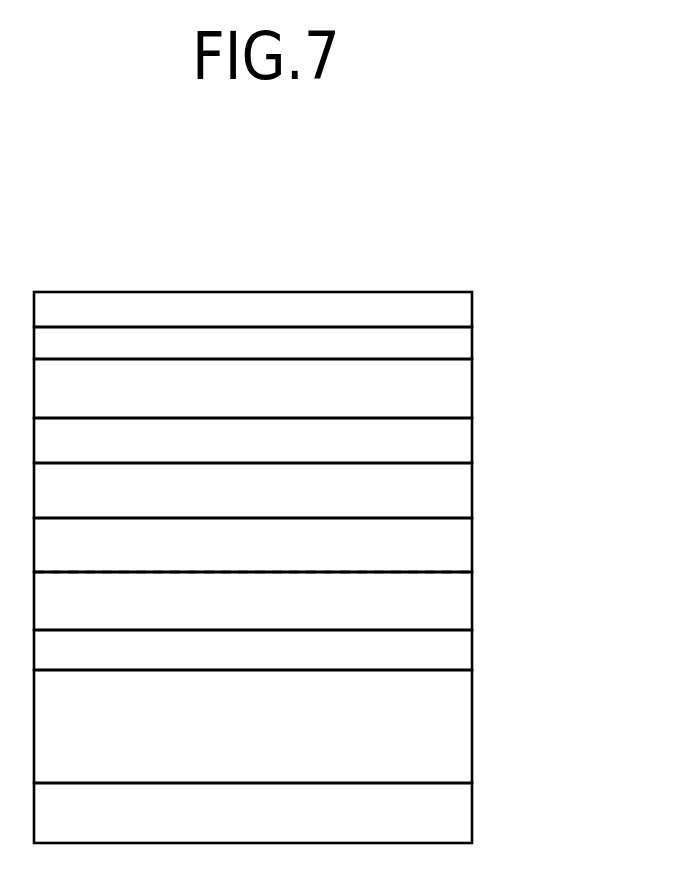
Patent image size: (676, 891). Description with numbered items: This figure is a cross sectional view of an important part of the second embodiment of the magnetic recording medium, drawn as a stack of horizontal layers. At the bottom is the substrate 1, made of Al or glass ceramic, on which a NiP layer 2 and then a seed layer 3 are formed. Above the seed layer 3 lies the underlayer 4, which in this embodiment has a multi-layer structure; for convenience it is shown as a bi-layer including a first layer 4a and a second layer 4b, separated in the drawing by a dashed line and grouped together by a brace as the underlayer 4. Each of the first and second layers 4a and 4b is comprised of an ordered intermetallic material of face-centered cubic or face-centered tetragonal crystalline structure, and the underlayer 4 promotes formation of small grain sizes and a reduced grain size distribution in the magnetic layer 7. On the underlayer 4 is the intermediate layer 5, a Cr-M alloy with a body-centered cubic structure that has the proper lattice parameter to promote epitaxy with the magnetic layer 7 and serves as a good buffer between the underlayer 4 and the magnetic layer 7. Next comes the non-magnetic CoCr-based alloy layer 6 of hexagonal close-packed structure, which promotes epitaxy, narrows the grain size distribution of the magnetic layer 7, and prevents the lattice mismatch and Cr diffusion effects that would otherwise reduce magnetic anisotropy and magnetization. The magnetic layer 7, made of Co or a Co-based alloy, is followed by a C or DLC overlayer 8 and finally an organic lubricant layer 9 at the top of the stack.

The substrate 1 is at (472, 815).
The NiP layer 2 is at (472, 732).
The seed layer 3 is at (472, 665).
The underlayer 4 is at (338, 574).
The first layer 4a is at (472, 604).
The second layer 4b is at (472, 548).
The intermediate layer 5 is at (472, 494).
The CoCr-based alloy layer 6 is at (472, 446).
The magnetic layer 7 is at (472, 398).
The overlayer 8 is at (472, 346).
The organic lubricant layer 9 is at (472, 313).